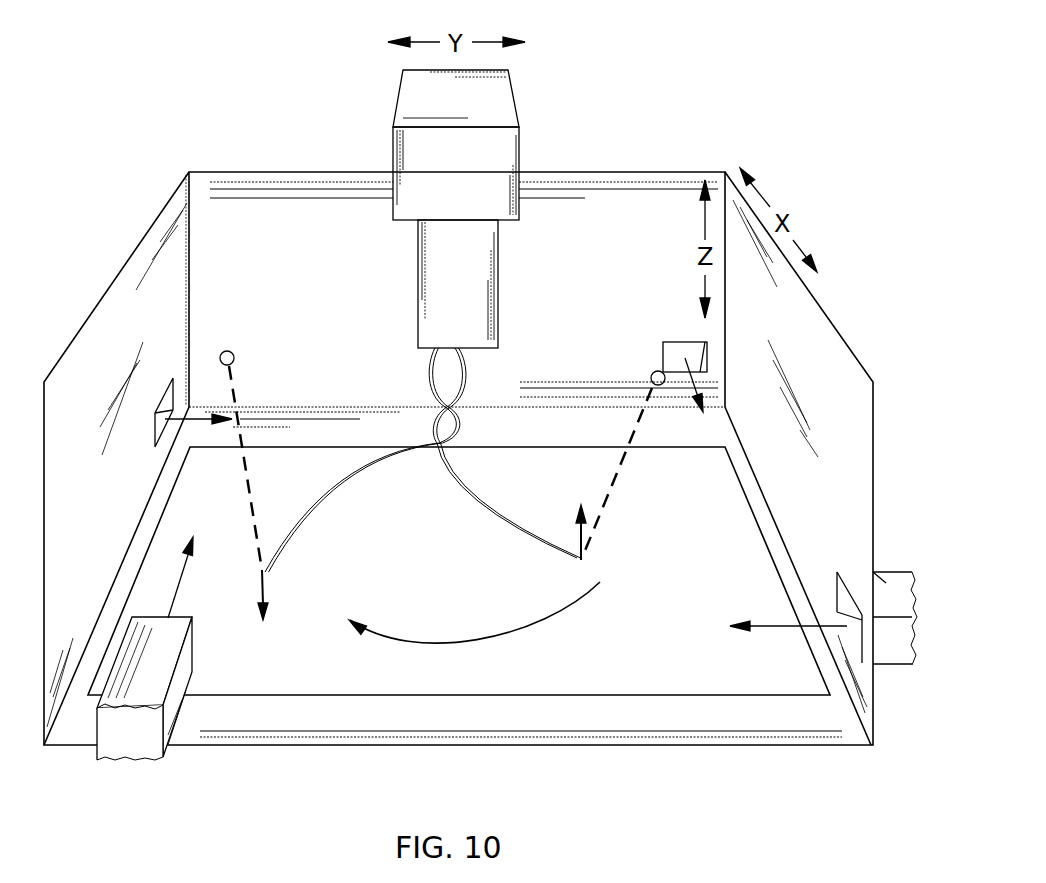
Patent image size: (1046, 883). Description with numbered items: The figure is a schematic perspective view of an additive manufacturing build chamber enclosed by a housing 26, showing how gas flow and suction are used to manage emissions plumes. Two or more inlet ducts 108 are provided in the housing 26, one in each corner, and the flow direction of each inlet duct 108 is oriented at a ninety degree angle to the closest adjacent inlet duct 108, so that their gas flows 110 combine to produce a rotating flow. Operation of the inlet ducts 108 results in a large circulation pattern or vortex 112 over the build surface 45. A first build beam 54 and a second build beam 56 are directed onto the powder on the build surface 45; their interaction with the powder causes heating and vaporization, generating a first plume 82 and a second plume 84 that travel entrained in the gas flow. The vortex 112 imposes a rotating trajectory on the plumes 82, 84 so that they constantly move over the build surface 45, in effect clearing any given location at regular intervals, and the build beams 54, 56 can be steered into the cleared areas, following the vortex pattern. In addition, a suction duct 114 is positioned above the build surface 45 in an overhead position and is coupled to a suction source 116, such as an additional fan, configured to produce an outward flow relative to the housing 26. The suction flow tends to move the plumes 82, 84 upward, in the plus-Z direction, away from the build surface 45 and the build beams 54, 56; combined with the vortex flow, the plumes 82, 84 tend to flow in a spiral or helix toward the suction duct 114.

The housing 26 is at (840, 372).
The build surface 45 is at (799, 685).
The first build beam 54 is at (233, 372).
The second build beam 56 is at (636, 430).
The first plume 82 is at (330, 491).
The second plume 84 is at (477, 504).
The inlet duct 108 is at (167, 390).
The gas flow 110 is at (506, 499).
The vortex 112 is at (454, 612).
The suction duct 114 is at (484, 300).
The suction source 116 is at (483, 185).